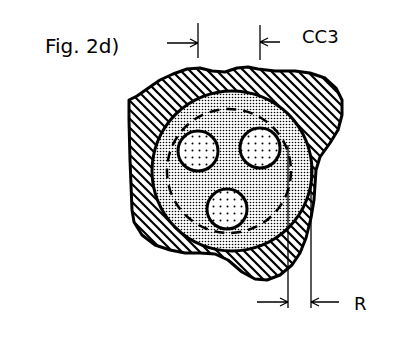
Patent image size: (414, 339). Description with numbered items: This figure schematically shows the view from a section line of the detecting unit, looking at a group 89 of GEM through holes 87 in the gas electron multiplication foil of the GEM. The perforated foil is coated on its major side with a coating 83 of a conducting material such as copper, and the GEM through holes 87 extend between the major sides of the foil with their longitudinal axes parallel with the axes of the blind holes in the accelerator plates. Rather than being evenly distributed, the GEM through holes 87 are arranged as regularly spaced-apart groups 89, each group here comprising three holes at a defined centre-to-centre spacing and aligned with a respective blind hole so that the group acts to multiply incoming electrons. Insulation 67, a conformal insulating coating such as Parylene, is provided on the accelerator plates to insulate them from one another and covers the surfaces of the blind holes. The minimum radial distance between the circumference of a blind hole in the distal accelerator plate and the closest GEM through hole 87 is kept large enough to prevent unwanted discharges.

The insulation 67 is at (130, 107).
The coating 83 is at (168, 217).
The GEM through hole 87 is at (258, 143).
The group of GEM through holes 89 is at (221, 151).